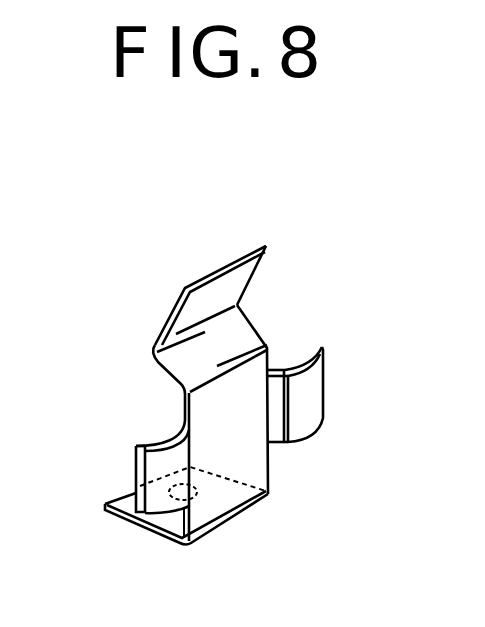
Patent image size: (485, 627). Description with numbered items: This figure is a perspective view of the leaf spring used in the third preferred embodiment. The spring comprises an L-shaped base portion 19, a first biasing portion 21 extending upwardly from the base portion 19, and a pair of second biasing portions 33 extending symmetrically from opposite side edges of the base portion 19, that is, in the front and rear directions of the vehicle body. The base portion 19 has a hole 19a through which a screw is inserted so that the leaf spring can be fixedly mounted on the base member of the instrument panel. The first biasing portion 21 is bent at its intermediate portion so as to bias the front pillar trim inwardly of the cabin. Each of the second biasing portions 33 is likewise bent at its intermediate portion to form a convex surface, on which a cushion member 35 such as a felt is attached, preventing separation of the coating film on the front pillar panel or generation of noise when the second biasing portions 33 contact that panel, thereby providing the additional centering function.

The first biasing portion 21 is at (229, 278).
The L-shaped base portion 19 is at (238, 445).
The hole 19a is at (208, 491).
The second biasing portions 33 is at (311, 359).
The cushion member 35 is at (320, 397).